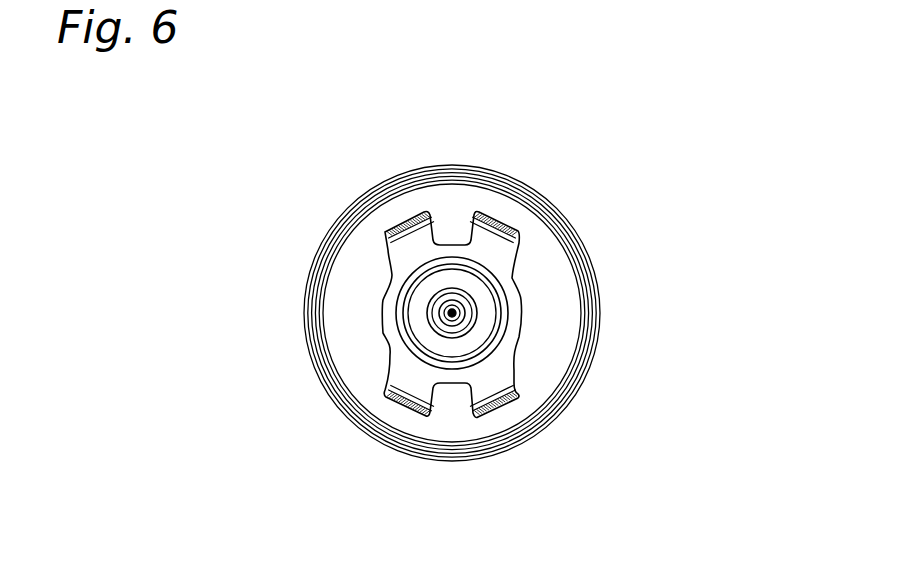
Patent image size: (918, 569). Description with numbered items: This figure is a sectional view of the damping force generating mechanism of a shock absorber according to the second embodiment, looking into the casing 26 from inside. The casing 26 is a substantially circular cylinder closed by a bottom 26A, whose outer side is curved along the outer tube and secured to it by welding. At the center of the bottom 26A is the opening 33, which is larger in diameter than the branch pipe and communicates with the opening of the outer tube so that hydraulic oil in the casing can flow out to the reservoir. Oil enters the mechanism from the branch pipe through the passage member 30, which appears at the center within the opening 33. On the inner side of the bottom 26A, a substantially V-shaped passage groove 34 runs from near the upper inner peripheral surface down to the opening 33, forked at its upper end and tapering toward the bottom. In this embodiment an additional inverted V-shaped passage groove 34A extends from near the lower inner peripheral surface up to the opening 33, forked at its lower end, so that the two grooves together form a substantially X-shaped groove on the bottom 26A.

The casing 26 is at (565, 217).
The bottom 26A is at (555, 289).
The passage member 30 is at (395, 313).
The opening 33 is at (519, 338).
The passage groove 34 is at (408, 242).
The passage groove 34A is at (417, 385).